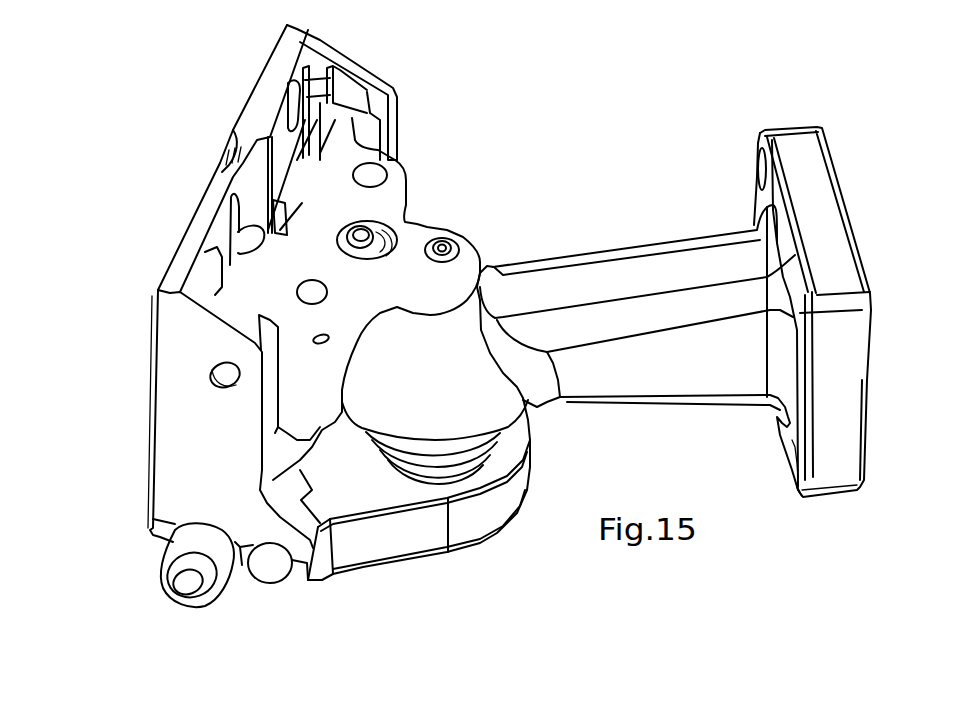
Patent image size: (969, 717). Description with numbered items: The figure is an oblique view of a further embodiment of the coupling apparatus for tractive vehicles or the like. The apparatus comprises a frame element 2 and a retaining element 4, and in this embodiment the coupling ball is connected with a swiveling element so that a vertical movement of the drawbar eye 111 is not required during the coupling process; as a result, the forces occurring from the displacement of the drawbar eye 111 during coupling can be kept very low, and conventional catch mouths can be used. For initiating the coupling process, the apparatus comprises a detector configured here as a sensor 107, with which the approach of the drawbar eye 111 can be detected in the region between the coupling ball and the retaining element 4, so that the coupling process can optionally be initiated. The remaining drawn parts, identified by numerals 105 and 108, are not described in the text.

The frame element 2 is at (201, 223).
The retaining element 4 is at (440, 288).
The screw 105 is at (408, 230).
The sensor 107 is at (403, 537).
The cylindrical pin 108 is at (200, 557).
The drawbar eye 111 is at (608, 280).